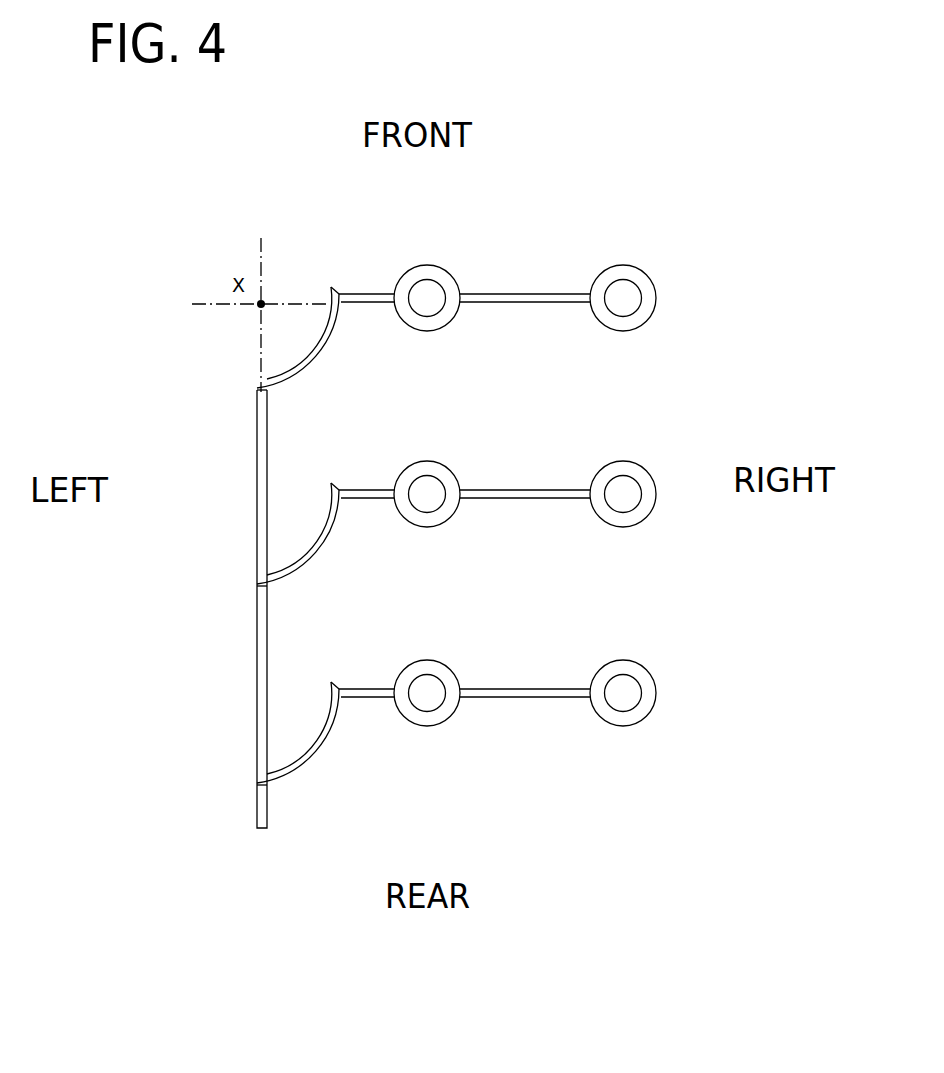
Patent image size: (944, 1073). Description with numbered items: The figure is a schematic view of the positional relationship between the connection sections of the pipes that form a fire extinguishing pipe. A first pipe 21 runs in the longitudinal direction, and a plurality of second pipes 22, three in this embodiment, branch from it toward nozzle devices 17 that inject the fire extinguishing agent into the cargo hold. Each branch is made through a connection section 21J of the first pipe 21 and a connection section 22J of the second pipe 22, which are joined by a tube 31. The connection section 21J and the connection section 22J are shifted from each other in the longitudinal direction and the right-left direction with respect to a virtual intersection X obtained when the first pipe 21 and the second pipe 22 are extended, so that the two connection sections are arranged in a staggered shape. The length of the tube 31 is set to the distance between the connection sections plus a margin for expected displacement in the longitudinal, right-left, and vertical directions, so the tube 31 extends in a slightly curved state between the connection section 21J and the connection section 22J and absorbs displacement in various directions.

The nozzle device 17 is at (428, 264).
The first pipe 21 is at (258, 492).
The connection section 21J is at (259, 391).
The second pipe 22 is at (518, 294).
The connection section 22J is at (331, 287).
The tube 31 is at (321, 355).